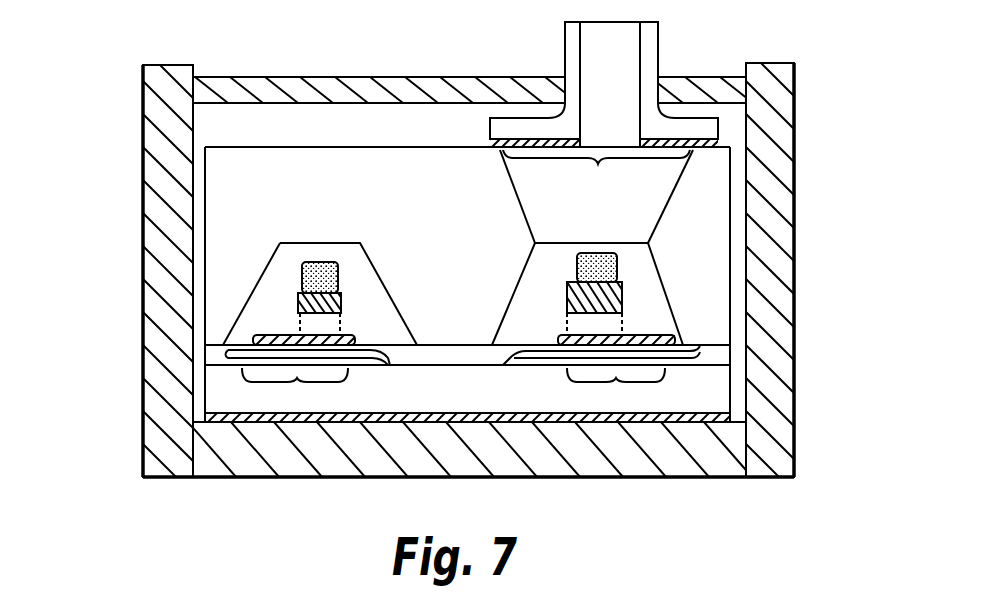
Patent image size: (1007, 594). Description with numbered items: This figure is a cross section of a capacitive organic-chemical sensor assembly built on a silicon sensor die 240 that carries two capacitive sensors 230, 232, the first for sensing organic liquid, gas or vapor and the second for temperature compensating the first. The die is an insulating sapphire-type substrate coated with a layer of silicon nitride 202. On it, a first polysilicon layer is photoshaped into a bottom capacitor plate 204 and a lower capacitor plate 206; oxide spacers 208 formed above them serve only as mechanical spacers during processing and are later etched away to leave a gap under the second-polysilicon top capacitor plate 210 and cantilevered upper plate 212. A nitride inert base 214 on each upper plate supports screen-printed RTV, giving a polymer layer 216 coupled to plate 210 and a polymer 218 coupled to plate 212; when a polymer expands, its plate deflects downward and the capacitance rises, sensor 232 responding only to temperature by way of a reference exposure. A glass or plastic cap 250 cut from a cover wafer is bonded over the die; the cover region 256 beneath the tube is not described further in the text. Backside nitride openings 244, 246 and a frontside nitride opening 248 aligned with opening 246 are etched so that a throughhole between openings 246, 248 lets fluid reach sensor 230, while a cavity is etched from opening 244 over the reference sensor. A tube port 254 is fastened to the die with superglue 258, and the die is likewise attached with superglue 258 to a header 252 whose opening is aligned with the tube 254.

The layer of silicon nitride 202 is at (218, 354).
The bottom capacitor plate 204 is at (667, 333).
The lower capacitor plate 206 is at (353, 337).
The oxide spacers 208 is at (300, 322).
The top capacitor plate 210 is at (623, 300).
The cantilevered upper plate 212 is at (340, 300).
The inert base 214 is at (300, 297).
The polymer layer 216 is at (618, 260).
The polymer 218 is at (337, 262).
The capacitive sensor 230 is at (611, 375).
The capacitive sensor 232 is at (320, 329).
The silicon sensor die 240 is at (217, 405).
The nitride opening 244 is at (390, 365).
The nitride opening 246 is at (503, 363).
The frontside nitride opening 248 is at (596, 196).
The glass or plastic cap 250 is at (230, 188).
The header 252 is at (782, 373).
The tube port 254 is at (570, 32).
The cover plate 256 is at (490, 141).
The superglue 258 is at (717, 412).